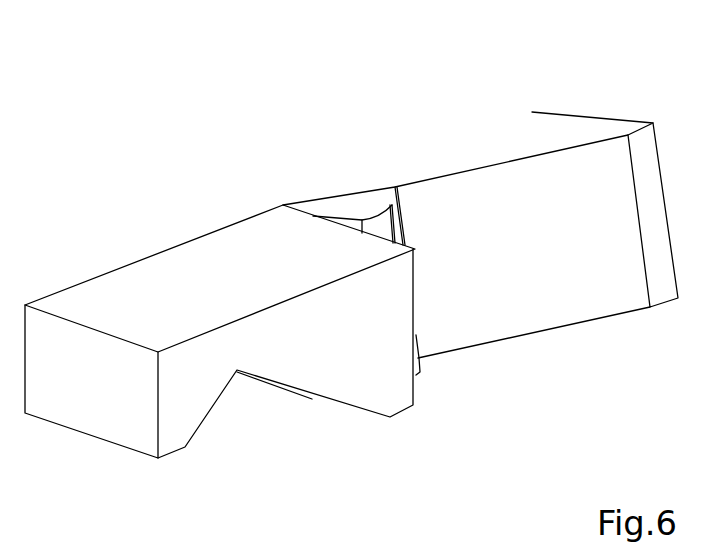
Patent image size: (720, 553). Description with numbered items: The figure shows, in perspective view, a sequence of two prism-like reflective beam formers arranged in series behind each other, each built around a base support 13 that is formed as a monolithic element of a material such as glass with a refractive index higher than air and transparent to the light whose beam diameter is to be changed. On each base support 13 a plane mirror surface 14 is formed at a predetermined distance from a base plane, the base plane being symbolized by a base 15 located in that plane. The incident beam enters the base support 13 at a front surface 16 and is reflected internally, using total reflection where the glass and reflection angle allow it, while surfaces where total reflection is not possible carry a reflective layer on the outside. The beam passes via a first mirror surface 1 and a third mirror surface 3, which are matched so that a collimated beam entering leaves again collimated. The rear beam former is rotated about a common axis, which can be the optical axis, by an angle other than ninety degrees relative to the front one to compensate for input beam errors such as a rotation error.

The first mirror surface 1 is at (323, 405).
The third mirror surface 3 is at (392, 203).
The base support 13 is at (357, 383).
The plane mirror surface 14 is at (205, 247).
The base 15 is at (403, 413).
The front surface 16 is at (97, 417).